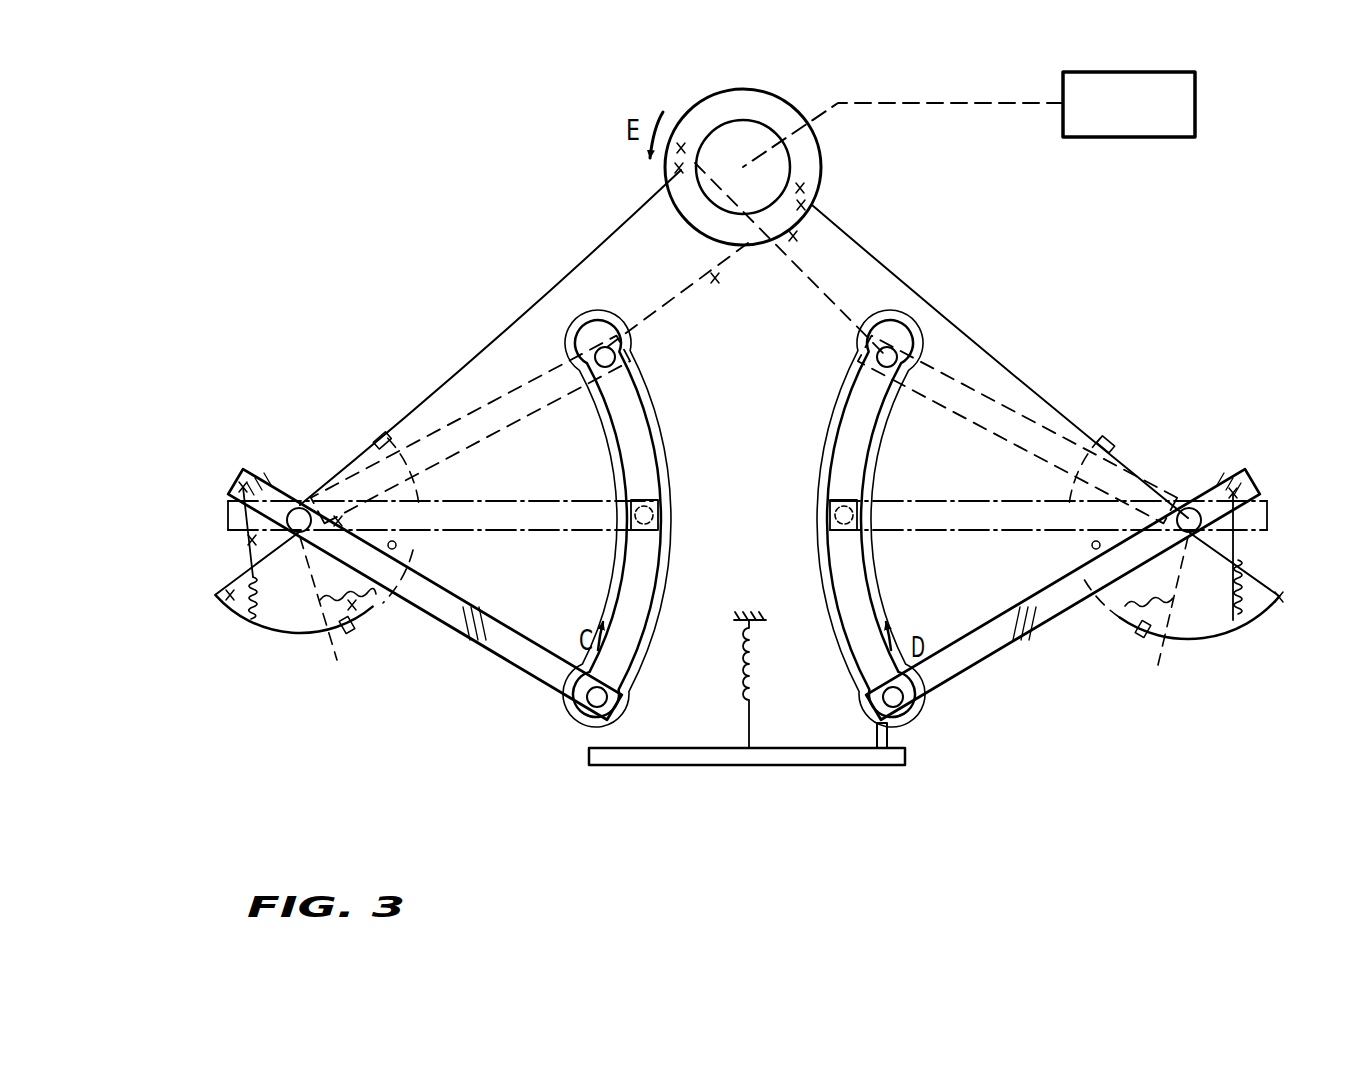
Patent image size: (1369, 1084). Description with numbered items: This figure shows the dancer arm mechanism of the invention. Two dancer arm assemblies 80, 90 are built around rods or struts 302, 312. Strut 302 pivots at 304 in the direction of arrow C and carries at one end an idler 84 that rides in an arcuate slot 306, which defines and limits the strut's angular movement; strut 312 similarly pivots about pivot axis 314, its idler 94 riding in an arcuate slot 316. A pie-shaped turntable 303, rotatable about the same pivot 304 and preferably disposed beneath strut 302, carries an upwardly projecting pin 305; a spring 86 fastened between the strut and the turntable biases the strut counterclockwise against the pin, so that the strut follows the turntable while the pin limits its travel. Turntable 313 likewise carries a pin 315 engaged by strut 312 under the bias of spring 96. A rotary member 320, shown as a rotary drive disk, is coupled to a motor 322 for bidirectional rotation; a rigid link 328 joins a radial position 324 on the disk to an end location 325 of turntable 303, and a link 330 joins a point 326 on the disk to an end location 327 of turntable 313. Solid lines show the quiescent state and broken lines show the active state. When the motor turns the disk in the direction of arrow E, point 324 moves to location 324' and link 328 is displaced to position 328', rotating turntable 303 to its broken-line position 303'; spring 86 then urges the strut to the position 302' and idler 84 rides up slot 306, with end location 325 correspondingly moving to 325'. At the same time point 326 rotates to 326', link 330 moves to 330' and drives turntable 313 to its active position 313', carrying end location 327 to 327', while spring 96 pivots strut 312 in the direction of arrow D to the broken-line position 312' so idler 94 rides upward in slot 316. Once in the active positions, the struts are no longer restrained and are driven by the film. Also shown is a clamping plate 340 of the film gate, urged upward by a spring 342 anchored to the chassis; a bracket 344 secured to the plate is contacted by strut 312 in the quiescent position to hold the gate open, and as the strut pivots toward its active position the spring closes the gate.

The dancer arm assembly 80 is at (246, 402).
The dancer arm assembly 90 is at (1256, 425).
The idler 84 is at (585, 345).
The idler 94 is at (922, 715).
The spring 86 is at (292, 622).
The spring 96 is at (1205, 630).
The strut 302 is at (425, 594).
The left lever arm rotated position 302' is at (470, 430).
The turntable 303 is at (273, 595).
The left sector rotated position 303' is at (353, 515).
The pivot axis 304 is at (298, 498).
The pin 305 is at (396, 546).
The arcuate slot 306 is at (622, 478).
The strut 312 is at (1063, 594).
The right lever arm rotated position 312' is at (1031, 430).
The turntable 313 is at (1205, 602).
The right sector rotated position 313' is at (1068, 527).
The pivot axis 314 is at (1245, 472).
The pin 315 is at (1135, 545).
The arcuate slot 316 is at (866, 470).
The rotary member 320 is at (820, 148).
The motor 322 is at (1128, 137).
The radial position 324 is at (633, 181).
The rotated location of point 324 324' is at (821, 252).
The end location of turntable 325 is at (204, 539).
The left rod rotated position 325' is at (365, 604).
The point 326 is at (840, 191).
The rotated position of point 326 326' is at (660, 111).
The end location of turntable 327 is at (1292, 564).
The right rod rotated position 327' is at (1138, 618).
The link 328 is at (490, 337).
The displaced position of link 328 328' is at (681, 296).
The link 330 is at (1000, 361).
The right cable rotated position 330' is at (841, 332).
The clamping plate 340 is at (725, 748).
The spring 342 is at (745, 655).
The bracket 344 is at (877, 728).